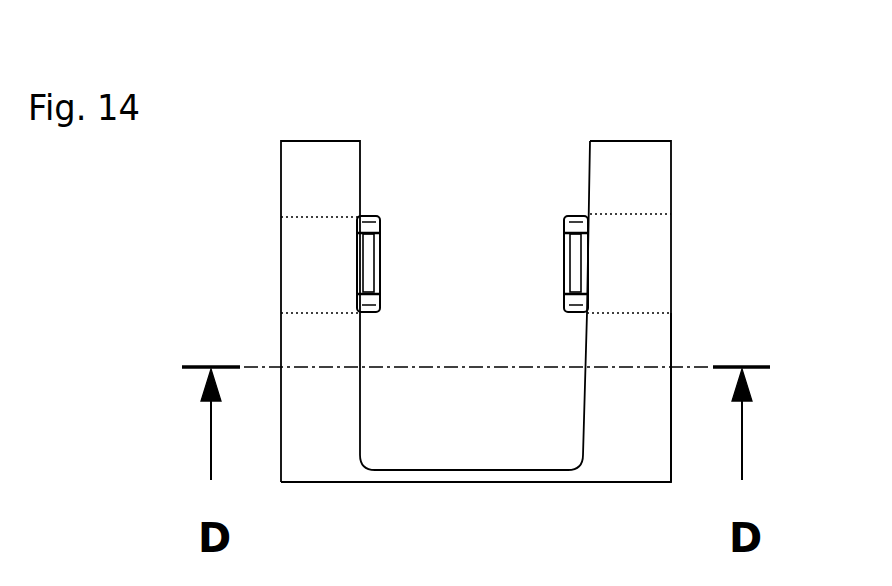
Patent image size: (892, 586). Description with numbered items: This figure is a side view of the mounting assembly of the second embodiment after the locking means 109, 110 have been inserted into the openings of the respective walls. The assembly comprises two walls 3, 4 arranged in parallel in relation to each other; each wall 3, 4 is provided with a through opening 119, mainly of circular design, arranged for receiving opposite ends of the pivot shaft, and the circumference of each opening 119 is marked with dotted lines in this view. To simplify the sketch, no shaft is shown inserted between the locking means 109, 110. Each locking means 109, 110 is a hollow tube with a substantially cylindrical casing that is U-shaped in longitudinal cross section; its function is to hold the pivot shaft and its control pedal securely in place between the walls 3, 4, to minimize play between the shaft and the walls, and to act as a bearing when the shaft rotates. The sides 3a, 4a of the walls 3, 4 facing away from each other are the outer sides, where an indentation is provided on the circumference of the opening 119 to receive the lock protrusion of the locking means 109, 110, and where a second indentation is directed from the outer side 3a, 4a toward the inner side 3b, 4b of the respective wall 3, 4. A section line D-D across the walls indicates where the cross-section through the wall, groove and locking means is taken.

The wall 3 is at (322, 138).
The wall 4 is at (615, 138).
The outer side 3a is at (277, 350).
The outer side 4a is at (671, 327).
The inner side 3b is at (363, 404).
The inner side 4b is at (580, 407).
The locking means 109 is at (378, 246).
The locking means 110 is at (563, 251).
The through opening 119 is at (312, 216).